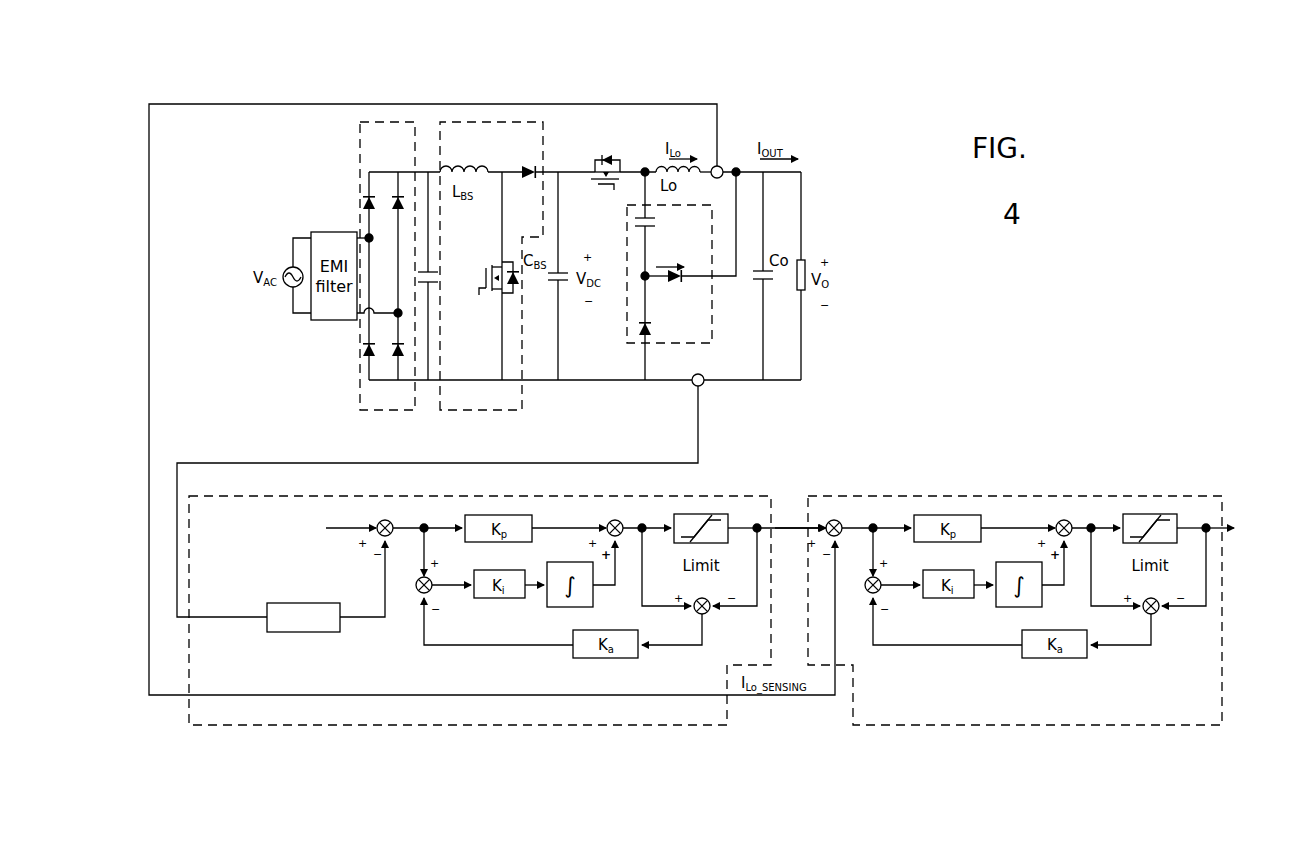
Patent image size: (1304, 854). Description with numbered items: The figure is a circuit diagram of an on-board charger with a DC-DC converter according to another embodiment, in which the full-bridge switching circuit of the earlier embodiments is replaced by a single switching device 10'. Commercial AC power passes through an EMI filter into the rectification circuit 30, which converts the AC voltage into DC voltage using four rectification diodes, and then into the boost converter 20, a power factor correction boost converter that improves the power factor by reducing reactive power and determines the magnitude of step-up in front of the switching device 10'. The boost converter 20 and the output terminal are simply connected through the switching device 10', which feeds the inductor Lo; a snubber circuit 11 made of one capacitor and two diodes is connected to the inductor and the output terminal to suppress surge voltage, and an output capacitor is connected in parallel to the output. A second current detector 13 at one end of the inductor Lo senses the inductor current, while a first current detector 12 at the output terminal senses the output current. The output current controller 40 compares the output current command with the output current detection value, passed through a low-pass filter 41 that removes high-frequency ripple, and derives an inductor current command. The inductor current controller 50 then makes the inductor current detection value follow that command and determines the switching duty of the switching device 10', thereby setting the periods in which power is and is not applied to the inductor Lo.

The rectification circuit 30 is at (393, 122).
The boost converter 20 is at (492, 122).
The switching device 10' is at (622, 124).
The second current detector 13 is at (722, 177).
The snubber circuit 11 is at (712, 222).
The first current detector 12 is at (704, 376).
The low-pass filter 41 is at (303, 634).
The output current controller 40 is at (507, 644).
The inductor current controller 50 is at (1052, 726).